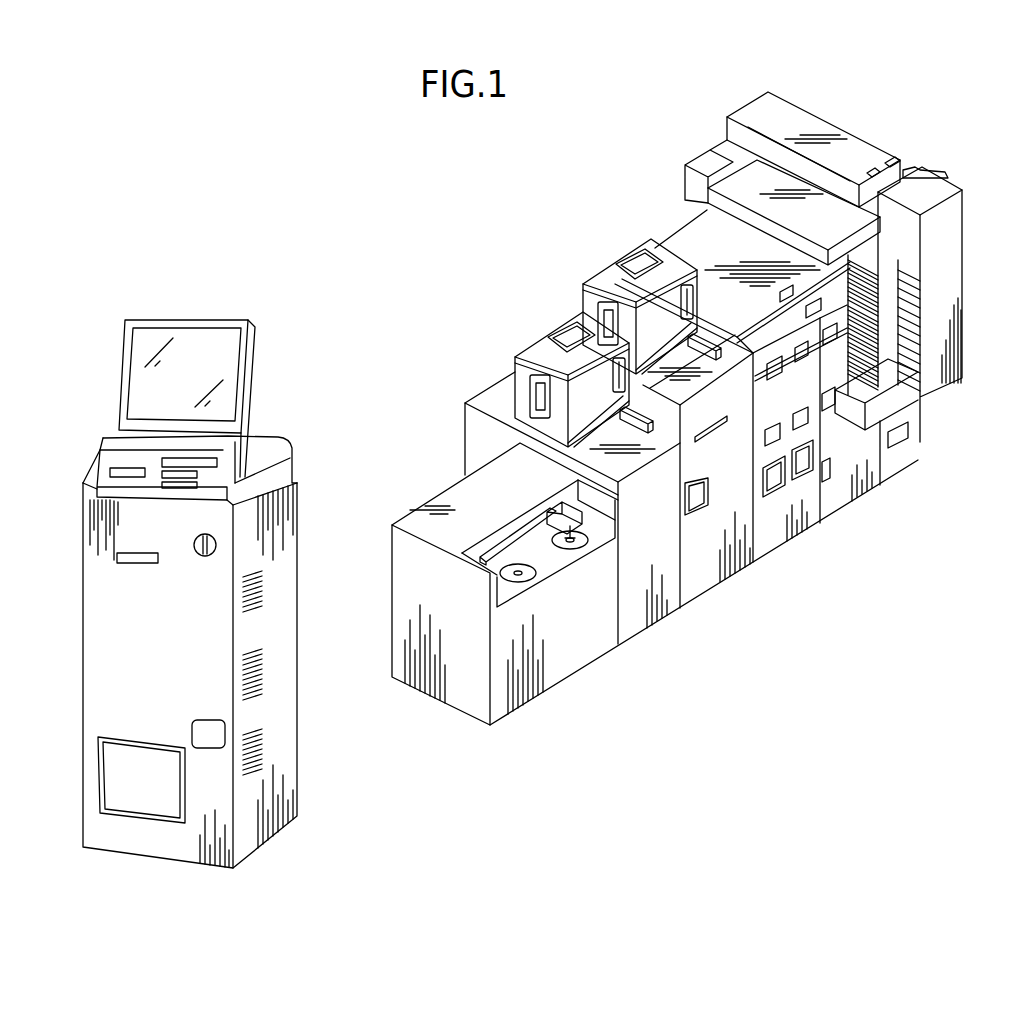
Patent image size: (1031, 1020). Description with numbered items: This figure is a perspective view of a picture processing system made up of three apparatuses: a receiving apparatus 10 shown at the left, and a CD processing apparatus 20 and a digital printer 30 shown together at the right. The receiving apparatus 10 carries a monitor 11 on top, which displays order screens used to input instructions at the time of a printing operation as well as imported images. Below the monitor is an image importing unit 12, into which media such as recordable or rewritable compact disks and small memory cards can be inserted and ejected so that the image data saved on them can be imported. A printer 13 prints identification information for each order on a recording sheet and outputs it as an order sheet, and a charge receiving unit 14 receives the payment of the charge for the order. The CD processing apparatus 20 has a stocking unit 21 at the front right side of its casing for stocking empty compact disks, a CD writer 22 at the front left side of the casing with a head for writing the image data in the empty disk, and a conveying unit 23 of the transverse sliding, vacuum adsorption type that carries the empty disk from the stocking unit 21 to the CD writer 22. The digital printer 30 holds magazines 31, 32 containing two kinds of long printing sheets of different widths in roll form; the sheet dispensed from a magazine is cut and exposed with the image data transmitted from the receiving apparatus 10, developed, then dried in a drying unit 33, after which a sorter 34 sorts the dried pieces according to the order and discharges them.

The receiving apparatus 10 is at (160, 302).
The monitor 11 is at (241, 320).
The image importing unit 12 is at (218, 475).
The printer 13 is at (105, 469).
The charge receiving unit 14 is at (203, 560).
The CD processing apparatus 20 is at (452, 465).
The stocking unit 21 is at (580, 543).
The CD writer 22 is at (533, 578).
The conveying unit 23 is at (528, 520).
The digital printer 30 is at (750, 583).
The magazine 31 is at (560, 328).
The magazine 32 is at (565, 325).
The drying unit 33 is at (836, 142).
The sorter 34 is at (948, 242).